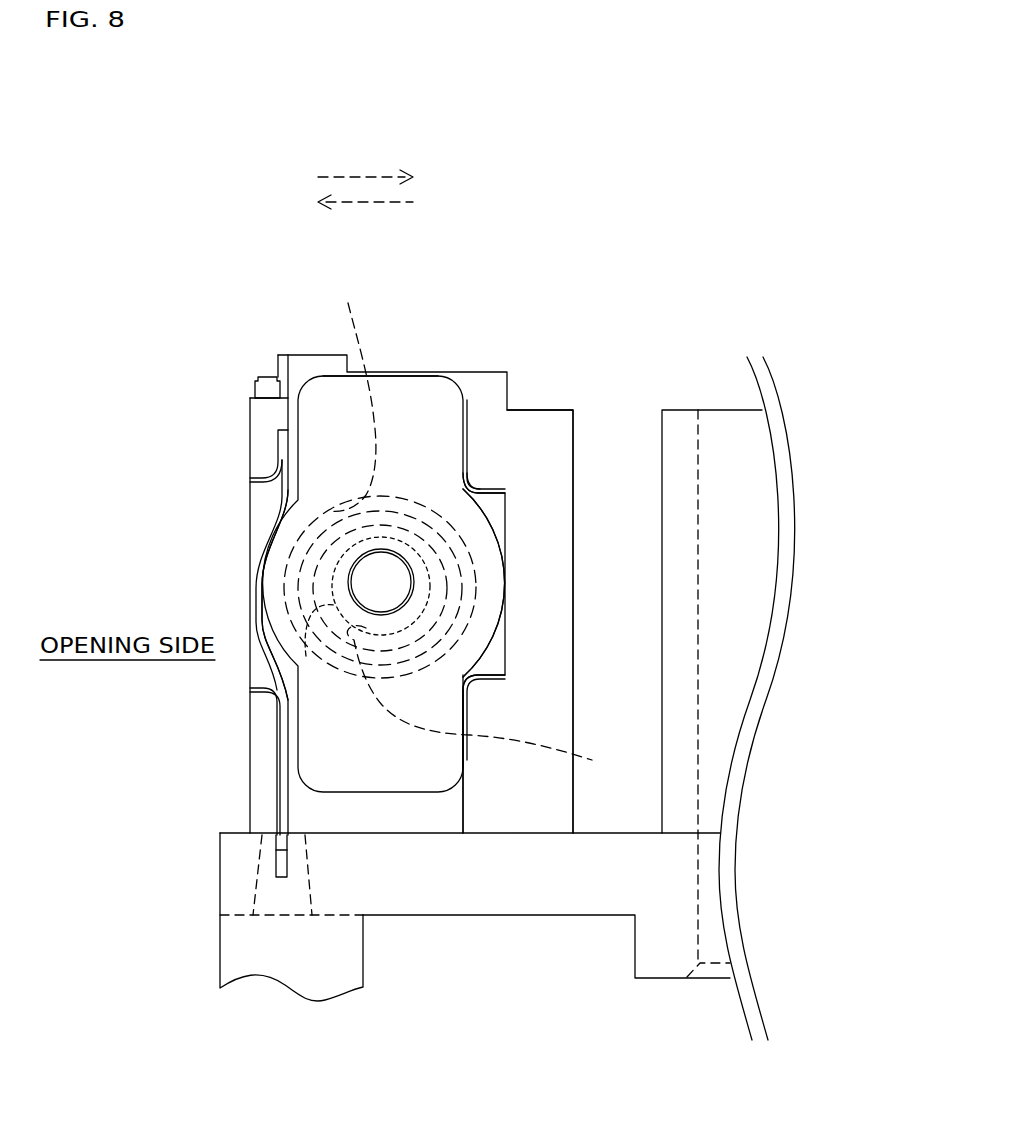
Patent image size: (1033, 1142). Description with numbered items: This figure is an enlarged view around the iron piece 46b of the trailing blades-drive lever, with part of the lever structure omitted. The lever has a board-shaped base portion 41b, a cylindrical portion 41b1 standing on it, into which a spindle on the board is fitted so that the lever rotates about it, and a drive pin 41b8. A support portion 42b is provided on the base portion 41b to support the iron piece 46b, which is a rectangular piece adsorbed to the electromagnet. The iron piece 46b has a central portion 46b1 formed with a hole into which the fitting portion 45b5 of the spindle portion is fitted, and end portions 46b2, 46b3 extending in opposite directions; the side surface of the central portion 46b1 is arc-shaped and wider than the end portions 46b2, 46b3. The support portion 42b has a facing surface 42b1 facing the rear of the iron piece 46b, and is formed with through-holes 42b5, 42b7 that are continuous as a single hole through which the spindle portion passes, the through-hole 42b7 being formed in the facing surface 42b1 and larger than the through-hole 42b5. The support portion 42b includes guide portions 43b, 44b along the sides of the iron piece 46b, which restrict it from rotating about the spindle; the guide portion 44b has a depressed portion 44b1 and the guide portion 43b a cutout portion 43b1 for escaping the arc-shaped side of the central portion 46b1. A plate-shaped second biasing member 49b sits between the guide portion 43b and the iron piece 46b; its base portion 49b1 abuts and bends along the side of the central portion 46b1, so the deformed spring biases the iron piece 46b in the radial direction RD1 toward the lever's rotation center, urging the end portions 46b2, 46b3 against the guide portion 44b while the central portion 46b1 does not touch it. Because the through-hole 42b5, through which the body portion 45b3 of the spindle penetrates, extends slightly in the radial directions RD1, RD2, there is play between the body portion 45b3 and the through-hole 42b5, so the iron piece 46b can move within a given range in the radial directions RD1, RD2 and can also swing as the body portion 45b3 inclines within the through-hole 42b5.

The radial direction RD1 is at (366, 177).
The radial direction RD2 is at (383, 202).
The base portion 41b is at (572, 918).
The cylindrical portion 41b1 is at (673, 420).
The drive pin 41b8 is at (337, 977).
The support portion 42b is at (484, 371).
The facing surface 42b1 is at (427, 817).
The through-hole 42b5 is at (497, 698).
The through-hole 42b7 is at (349, 395).
The guide portion 43b is at (264, 436).
The cutout portion 43b1 is at (264, 500).
The guide portion 44b is at (533, 427).
The depressed portion 44b1 is at (500, 510).
The body portion 45b3 is at (306, 652).
The fitting portion 45b5 is at (382, 582).
The iron piece 46b is at (319, 372).
The central portion 46b1 is at (477, 565).
The end portion 46b2 is at (427, 403).
The end portion 46b3 is at (440, 713).
The second biasing member 49b is at (288, 806).
The base portion 49b1 is at (264, 587).